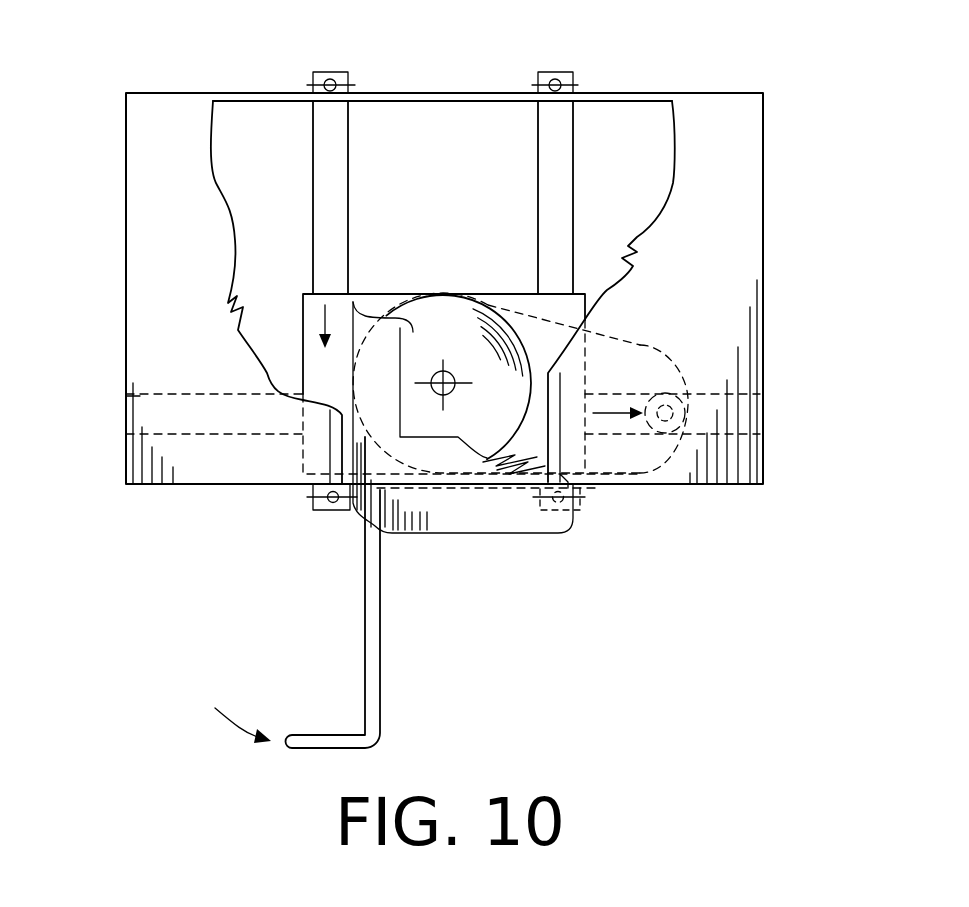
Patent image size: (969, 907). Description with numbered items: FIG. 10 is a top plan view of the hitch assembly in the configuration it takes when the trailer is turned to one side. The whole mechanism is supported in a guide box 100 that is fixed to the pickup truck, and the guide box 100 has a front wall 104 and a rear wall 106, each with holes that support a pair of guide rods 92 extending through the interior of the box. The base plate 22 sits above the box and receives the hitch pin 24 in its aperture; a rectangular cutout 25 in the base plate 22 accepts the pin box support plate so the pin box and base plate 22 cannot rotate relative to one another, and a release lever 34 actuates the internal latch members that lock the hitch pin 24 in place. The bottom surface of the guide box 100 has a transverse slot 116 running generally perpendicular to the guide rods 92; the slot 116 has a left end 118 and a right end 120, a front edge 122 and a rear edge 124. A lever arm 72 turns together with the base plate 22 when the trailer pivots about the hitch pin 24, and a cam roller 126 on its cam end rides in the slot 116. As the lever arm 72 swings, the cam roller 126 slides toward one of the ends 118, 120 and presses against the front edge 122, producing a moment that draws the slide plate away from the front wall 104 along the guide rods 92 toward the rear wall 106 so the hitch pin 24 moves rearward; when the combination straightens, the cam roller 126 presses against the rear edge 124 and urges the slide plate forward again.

The guide box 100 is at (763, 192).
The front wall 104 is at (405, 92).
The guide rods 92 is at (313, 178).
The base plate 22 is at (502, 517).
The rectangular depression or cutout 25 is at (402, 367).
The hitch pin 24 is at (455, 390).
The lever arm 72 is at (627, 345).
The front edge 122 is at (632, 390).
The cam roller 126 is at (668, 432).
The transverse slot 116 is at (217, 415).
The left end 118 is at (150, 410).
The rear edge 124 is at (203, 435).
The right end 120 is at (745, 408).
The rear wall 106 is at (470, 488).
The release lever 34 is at (380, 688).